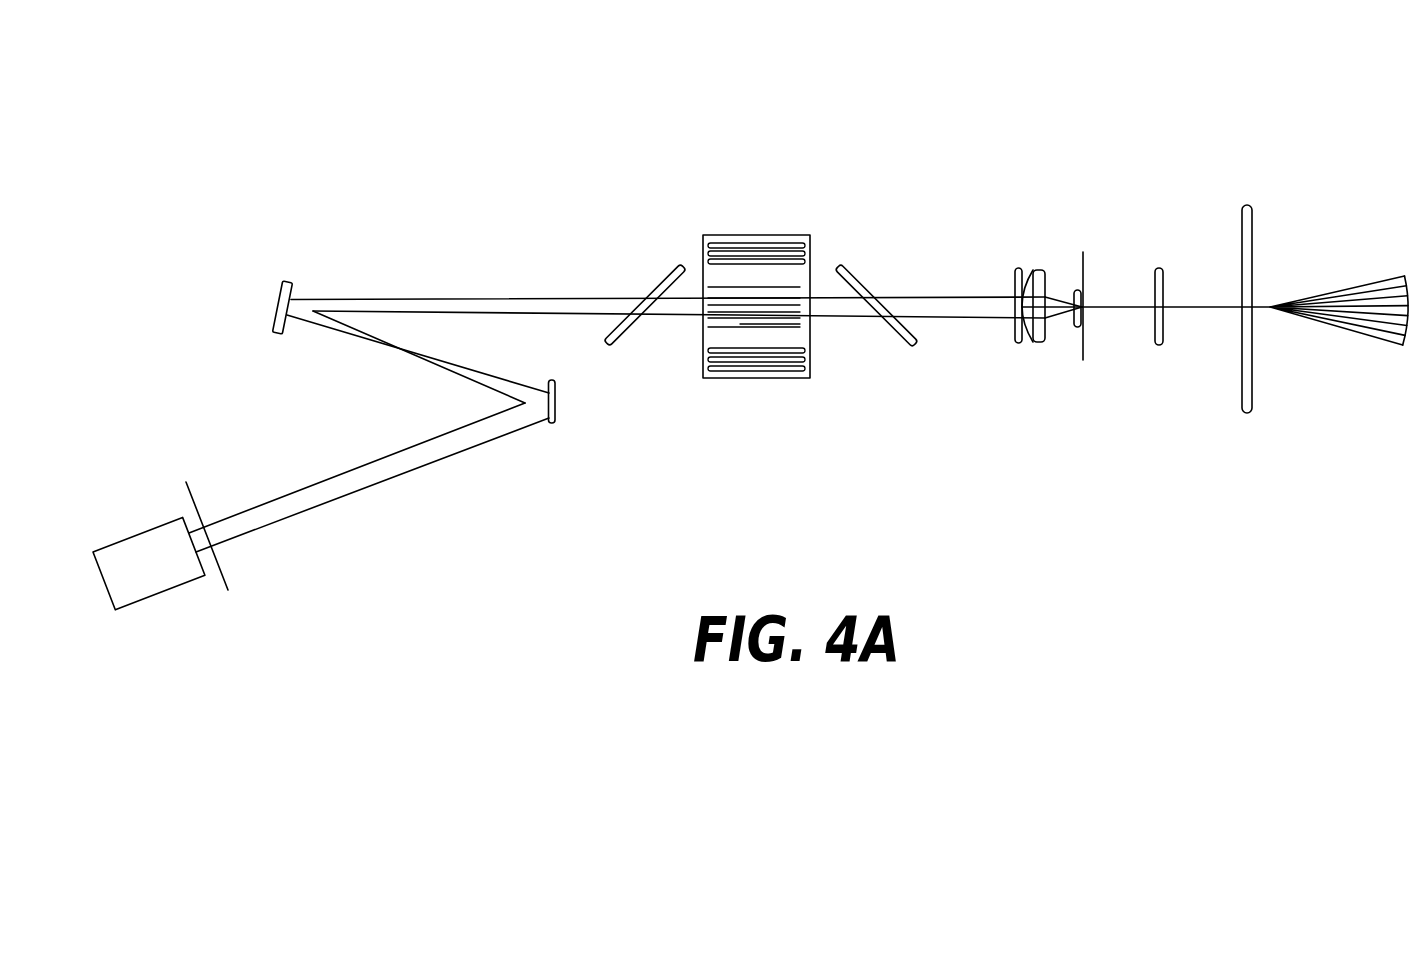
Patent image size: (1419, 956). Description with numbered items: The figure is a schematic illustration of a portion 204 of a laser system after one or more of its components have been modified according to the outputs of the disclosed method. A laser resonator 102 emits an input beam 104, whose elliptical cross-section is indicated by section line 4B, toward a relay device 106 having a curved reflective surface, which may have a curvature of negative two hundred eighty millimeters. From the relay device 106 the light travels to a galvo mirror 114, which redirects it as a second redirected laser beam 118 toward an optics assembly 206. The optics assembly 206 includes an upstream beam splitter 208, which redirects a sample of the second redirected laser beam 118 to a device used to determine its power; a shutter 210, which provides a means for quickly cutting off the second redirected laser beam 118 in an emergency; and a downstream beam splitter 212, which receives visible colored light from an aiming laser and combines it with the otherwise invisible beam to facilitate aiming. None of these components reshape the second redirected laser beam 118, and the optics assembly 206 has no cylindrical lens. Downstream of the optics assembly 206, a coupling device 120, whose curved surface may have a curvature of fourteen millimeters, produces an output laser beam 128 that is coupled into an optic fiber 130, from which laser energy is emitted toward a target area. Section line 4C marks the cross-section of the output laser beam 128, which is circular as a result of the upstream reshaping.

The portion of a laser system 204 is at (383, 134).
The laser resonator 102 is at (162, 578).
The input beam 104 is at (268, 524).
The relay device 106 is at (552, 428).
The galvo mirror 114 is at (288, 280).
The second redirected laser beam 118 is at (473, 299).
The upstream beam splitter 208 is at (668, 271).
The optics assembly 206 is at (759, 236).
The shutter 210 is at (774, 233).
The downstream beam splitter 212 is at (853, 267).
The coupling device 120 is at (1031, 268).
The output laser beam 128 is at (1050, 324).
The optic fiber 130 is at (1084, 306).
The section line 4B is at (213, 534).
The section line 4C is at (1095, 302).